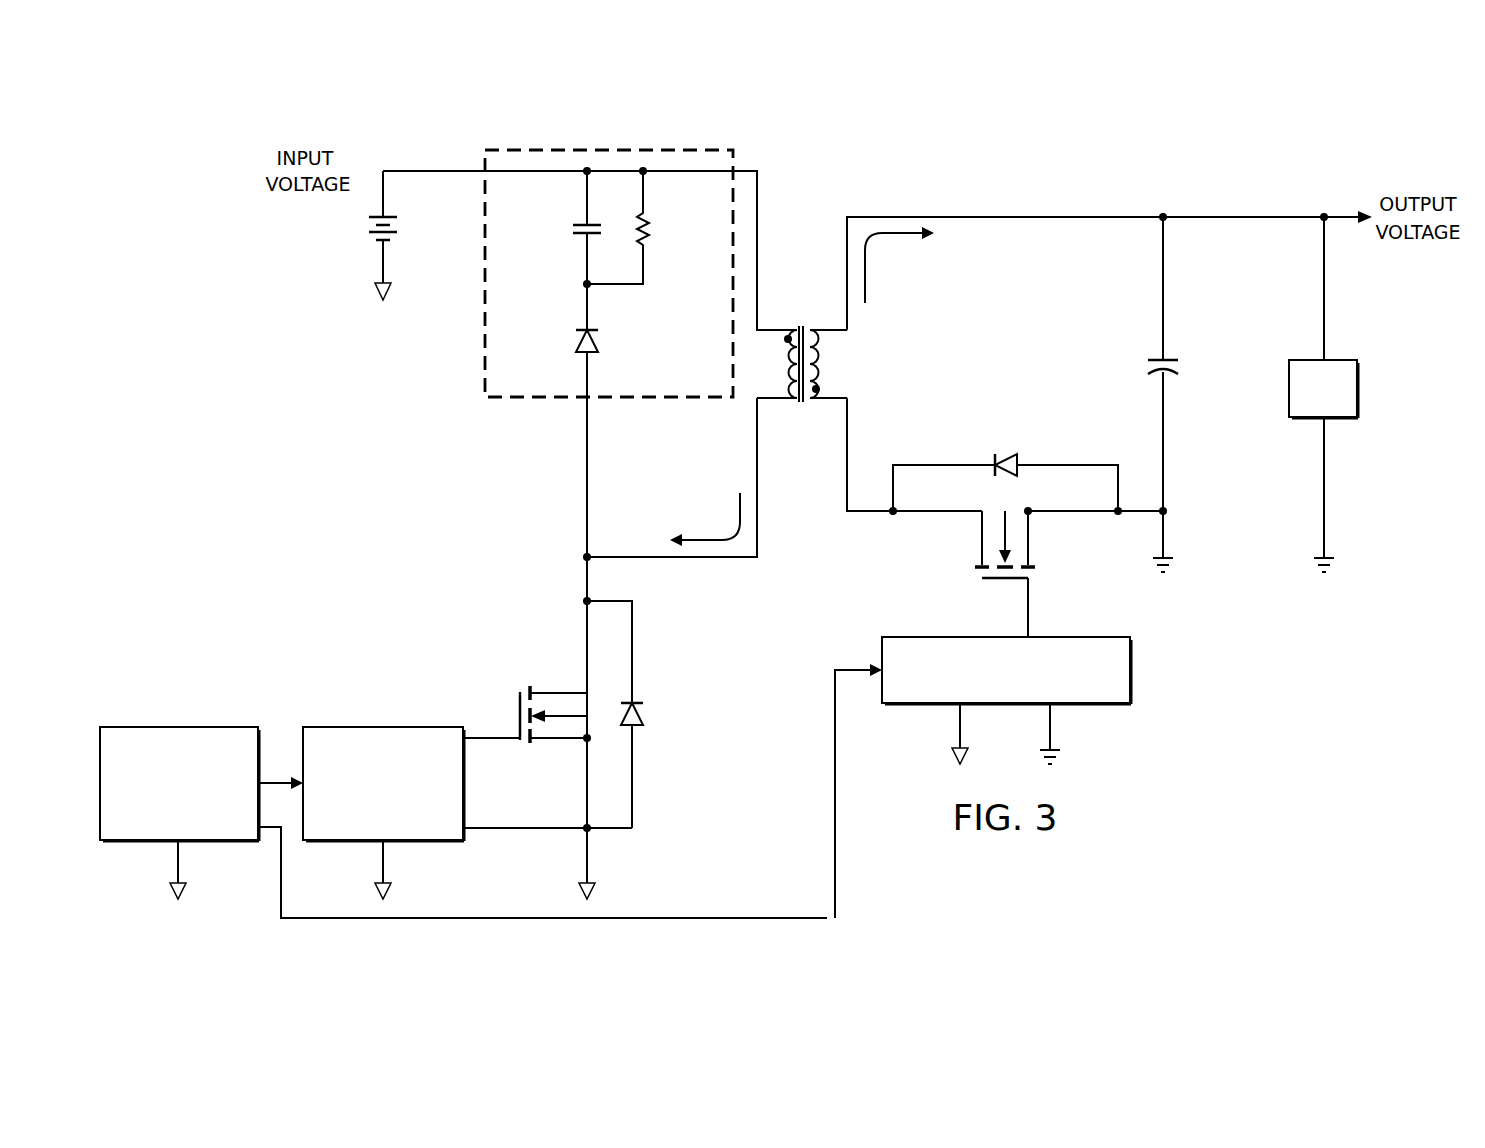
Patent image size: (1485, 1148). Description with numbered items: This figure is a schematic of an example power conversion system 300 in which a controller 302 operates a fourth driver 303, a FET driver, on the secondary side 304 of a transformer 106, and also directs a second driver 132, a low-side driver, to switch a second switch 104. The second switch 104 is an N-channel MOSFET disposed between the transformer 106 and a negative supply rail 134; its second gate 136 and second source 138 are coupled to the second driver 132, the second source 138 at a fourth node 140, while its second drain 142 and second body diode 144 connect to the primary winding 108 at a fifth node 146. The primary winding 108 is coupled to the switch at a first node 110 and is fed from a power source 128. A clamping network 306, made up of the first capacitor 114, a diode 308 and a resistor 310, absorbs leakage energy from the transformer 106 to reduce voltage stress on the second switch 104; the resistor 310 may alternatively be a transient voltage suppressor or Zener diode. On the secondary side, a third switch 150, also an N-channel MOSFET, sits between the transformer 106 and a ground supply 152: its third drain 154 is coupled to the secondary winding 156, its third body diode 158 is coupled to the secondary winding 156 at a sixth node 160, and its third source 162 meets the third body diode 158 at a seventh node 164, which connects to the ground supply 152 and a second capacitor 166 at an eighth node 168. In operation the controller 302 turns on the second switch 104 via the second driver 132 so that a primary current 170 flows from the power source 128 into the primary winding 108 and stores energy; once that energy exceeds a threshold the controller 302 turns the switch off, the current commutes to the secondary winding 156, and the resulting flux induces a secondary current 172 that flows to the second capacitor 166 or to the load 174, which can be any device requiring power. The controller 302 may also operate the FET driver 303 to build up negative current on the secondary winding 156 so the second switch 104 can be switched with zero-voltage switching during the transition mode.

The power conversion system 300 is at (1178, 148).
The clamping network 306 is at (562, 145).
The power source 128 is at (366, 226).
The first capacitor 114 is at (571, 229).
The resistor 310 is at (655, 229).
The diode 308 is at (580, 343).
The transformer 106 is at (805, 373).
The primary winding 108 is at (796, 401).
The secondary winding 156 is at (812, 401).
The secondary side 304 is at (1005, 214).
The secondary current 172 is at (866, 268).
The primary current 170 is at (739, 514).
The first node 110 is at (583, 554).
The fifth node 146 is at (583, 599).
The second switch 104 is at (511, 701).
The second drain 142 is at (558, 690).
The second gate 136 is at (517, 730).
The second source 138 is at (560, 745).
The second body diode 144 is at (643, 707).
The fourth node 140 is at (582, 834).
The controller 302 is at (145, 845).
The negative supply rail 134 is at (186, 891).
The second driver 132 is at (348, 845).
The fourth driver 303 is at (1132, 678).
The third switch 150 is at (1001, 572).
The third drain 154 is at (980, 545).
The third source 162 is at (1030, 540).
The sixth node 160 is at (889, 516).
The third body diode 158 is at (1004, 458).
The seventh node 164 is at (1124, 500).
The eighth node 168 is at (1168, 509).
The ground supply 152 is at (1175, 562).
The second capacitor 166 is at (1180, 369).
The load 174 is at (1358, 391).